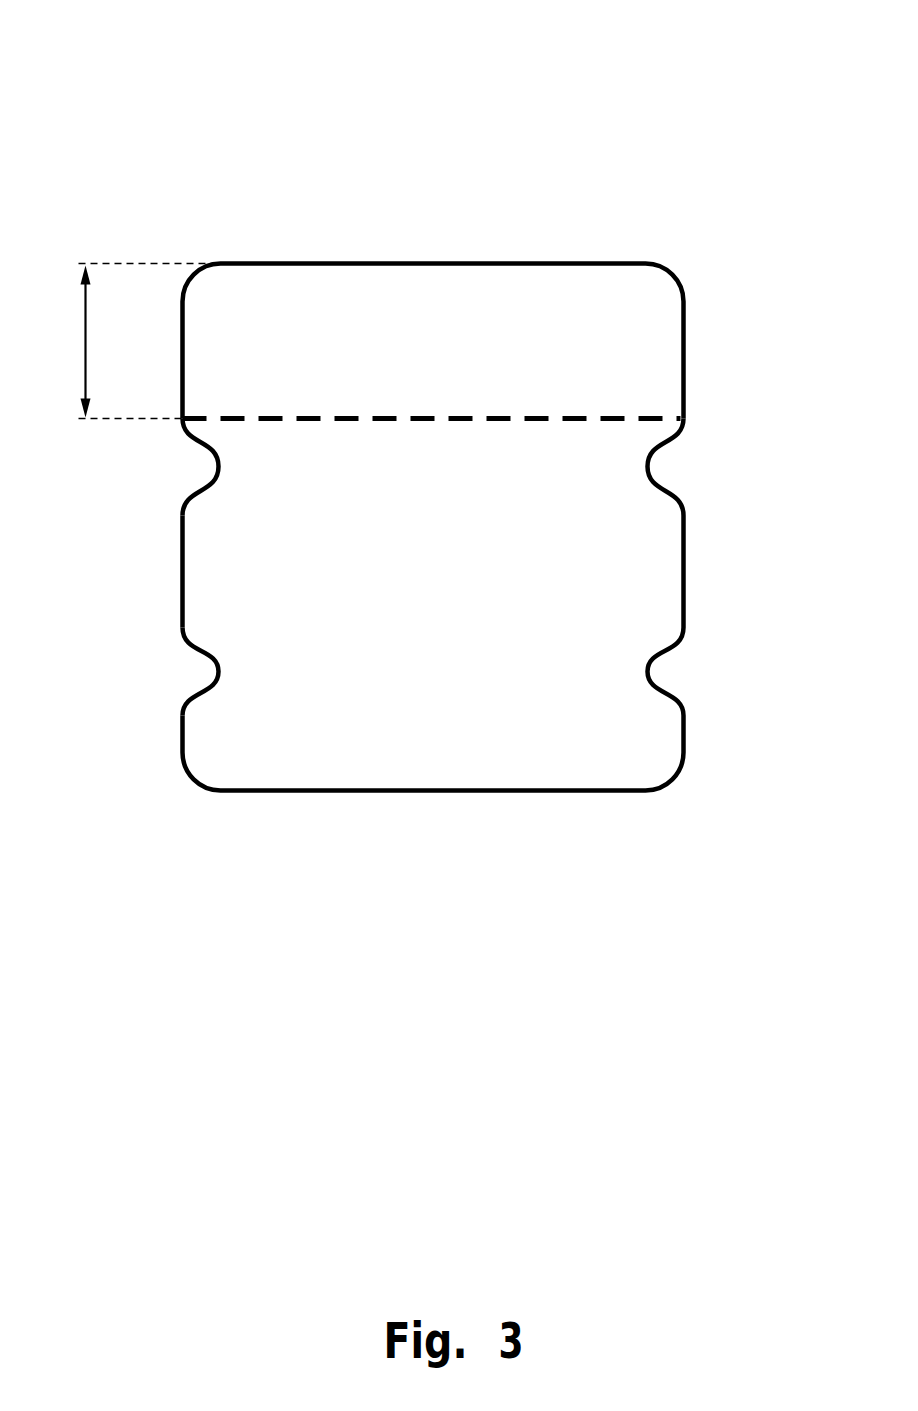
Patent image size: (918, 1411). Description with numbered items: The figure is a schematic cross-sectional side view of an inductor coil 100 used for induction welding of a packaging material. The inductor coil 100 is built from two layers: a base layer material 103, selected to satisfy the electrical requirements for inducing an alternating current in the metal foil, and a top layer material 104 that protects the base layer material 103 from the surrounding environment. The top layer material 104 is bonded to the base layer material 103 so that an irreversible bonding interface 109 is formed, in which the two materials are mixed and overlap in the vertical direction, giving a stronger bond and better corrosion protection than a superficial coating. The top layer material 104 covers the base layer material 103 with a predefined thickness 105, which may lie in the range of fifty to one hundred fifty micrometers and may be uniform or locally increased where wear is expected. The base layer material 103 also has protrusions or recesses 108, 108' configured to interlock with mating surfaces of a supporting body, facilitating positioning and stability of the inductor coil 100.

The inductor coil 100 is at (175, 64).
The base layer material 103 is at (662, 615).
The top layer material 104 is at (663, 335).
The thickness 105 is at (112, 341).
The protrusion or recess 108 is at (102, 572).
The protrusion or recess 108' is at (133, 672).
The bonding interface 109 is at (618, 420).